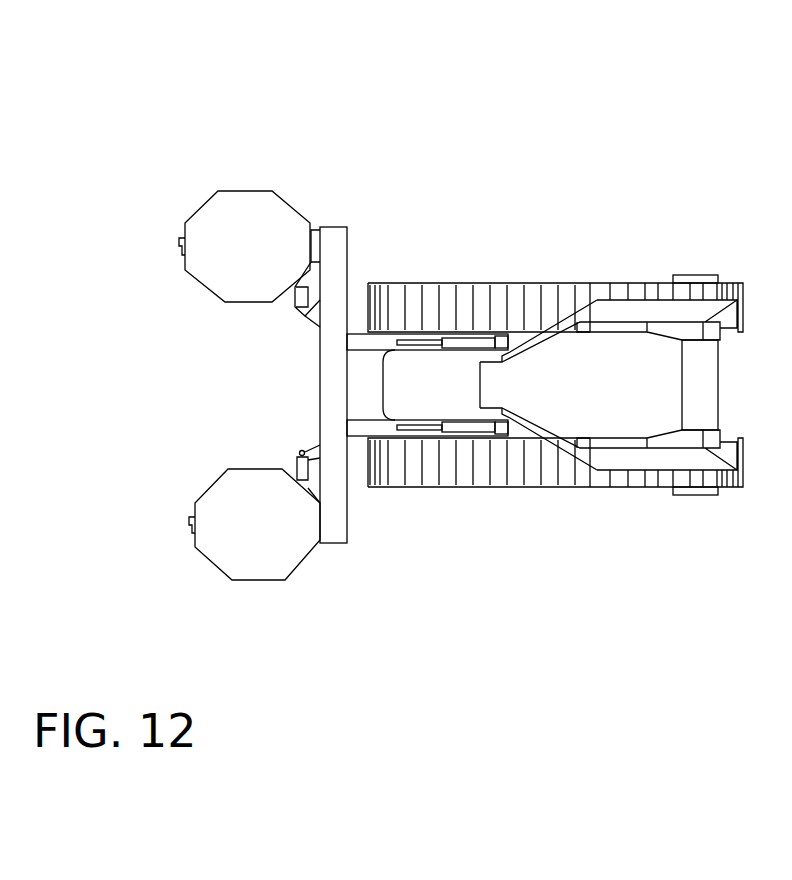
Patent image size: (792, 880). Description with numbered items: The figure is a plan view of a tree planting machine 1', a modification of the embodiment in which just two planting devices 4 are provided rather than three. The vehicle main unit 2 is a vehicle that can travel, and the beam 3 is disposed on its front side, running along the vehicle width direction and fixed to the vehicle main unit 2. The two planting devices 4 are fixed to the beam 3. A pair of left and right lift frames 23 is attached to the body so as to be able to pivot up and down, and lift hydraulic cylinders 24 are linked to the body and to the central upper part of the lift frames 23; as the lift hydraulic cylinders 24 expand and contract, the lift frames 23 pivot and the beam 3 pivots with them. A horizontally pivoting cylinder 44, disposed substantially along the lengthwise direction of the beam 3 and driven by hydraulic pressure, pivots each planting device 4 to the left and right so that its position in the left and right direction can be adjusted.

The tree planting machine 1' is at (461, 324).
The vehicle main unit 2 is at (561, 276).
The beam 3 is at (330, 345).
The planting device 4 is at (203, 223).
The lift frame 23 is at (372, 335).
The lift hydraulic cylinder 24 is at (444, 338).
The horizontally pivoting cylinder 44 is at (295, 305).